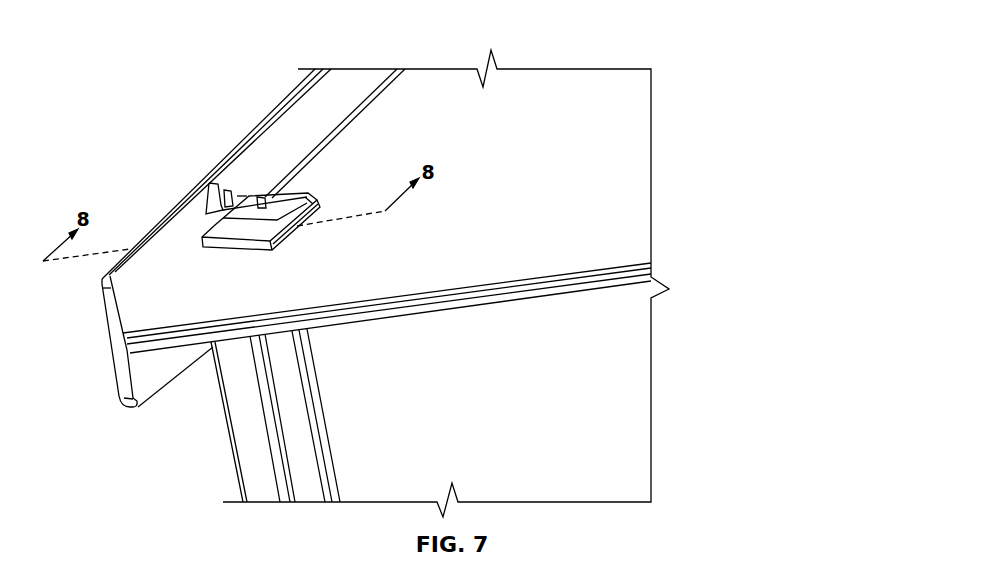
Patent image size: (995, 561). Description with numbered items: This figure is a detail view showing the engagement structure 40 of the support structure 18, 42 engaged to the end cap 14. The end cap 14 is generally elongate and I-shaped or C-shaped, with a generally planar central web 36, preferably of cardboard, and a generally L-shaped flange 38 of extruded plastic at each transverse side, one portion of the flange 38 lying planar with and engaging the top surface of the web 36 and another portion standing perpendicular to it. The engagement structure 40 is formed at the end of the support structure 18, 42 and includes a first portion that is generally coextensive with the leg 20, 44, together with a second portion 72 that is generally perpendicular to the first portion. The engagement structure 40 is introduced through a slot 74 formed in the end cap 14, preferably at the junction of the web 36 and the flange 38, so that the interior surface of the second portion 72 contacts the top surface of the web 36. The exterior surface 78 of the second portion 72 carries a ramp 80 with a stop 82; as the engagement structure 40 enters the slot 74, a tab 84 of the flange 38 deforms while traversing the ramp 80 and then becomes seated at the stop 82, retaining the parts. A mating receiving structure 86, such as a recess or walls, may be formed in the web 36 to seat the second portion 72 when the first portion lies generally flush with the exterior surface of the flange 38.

The end cap 14 is at (304, 123).
The support structure 18 is at (187, 422).
The support structure 42 is at (229, 439).
The leg 20 is at (334, 415).
The leg 44 is at (329, 434).
The central web 36 is at (376, 127).
The flange 38 is at (298, 90).
The engagement structure 40 is at (241, 184).
The second portion 72 is at (237, 195).
The slot 74 is at (176, 216).
The exterior surface 78 is at (226, 241).
The ramp 80 is at (233, 200).
The stop 82 is at (213, 226).
The tab 84 is at (257, 203).
The mating receiving structure 86 is at (287, 203).